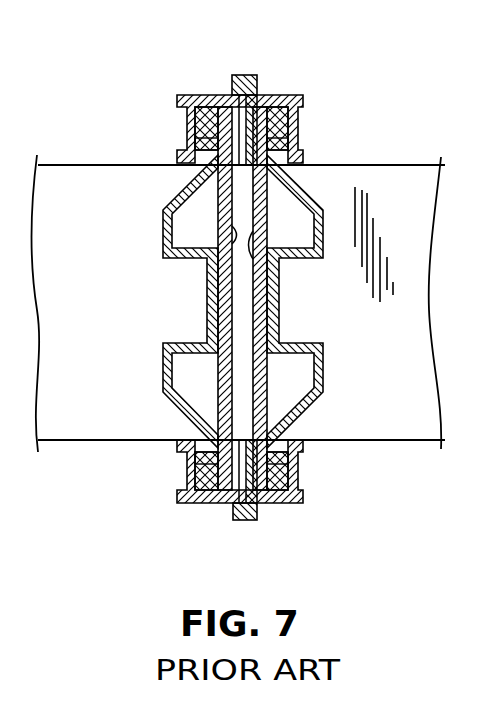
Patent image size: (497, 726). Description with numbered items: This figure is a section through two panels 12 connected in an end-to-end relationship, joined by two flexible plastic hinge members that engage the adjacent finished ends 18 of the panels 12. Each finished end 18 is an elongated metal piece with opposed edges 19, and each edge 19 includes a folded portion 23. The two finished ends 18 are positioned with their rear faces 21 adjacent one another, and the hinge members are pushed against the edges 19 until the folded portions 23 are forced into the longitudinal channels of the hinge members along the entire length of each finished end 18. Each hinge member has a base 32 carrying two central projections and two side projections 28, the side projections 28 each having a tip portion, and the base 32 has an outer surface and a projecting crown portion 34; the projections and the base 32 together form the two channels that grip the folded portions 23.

The panel 12 is at (77, 315).
The finished end 18 is at (207, 326).
The opposed edges 19 is at (207, 506).
The rear face 21 is at (195, 256).
The folded portion 23 is at (188, 136).
The side projections 28 is at (190, 113).
The base 32 is at (203, 94).
The projecting crown portion 34 is at (244, 75).